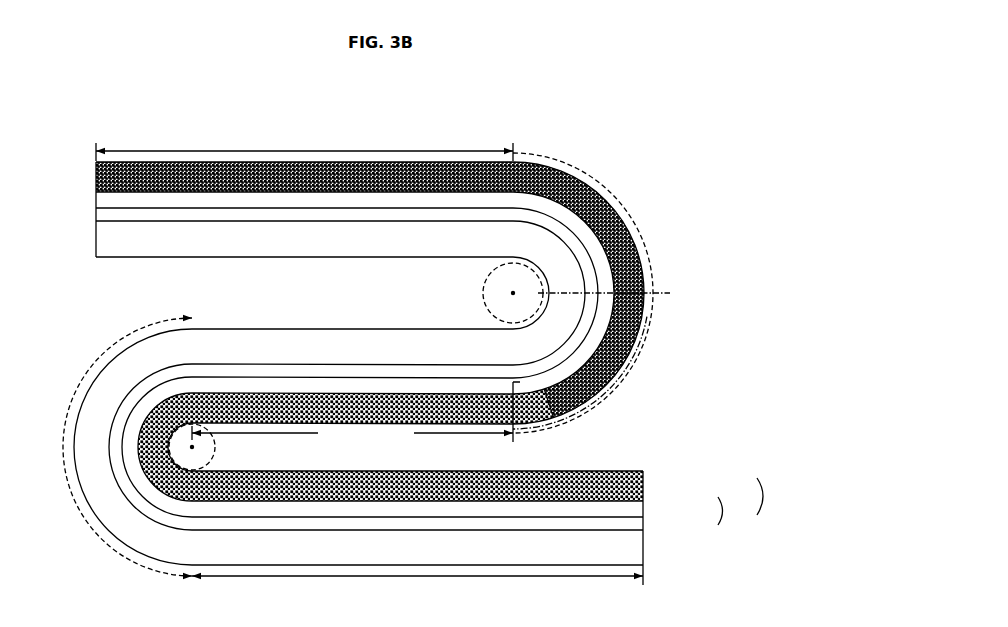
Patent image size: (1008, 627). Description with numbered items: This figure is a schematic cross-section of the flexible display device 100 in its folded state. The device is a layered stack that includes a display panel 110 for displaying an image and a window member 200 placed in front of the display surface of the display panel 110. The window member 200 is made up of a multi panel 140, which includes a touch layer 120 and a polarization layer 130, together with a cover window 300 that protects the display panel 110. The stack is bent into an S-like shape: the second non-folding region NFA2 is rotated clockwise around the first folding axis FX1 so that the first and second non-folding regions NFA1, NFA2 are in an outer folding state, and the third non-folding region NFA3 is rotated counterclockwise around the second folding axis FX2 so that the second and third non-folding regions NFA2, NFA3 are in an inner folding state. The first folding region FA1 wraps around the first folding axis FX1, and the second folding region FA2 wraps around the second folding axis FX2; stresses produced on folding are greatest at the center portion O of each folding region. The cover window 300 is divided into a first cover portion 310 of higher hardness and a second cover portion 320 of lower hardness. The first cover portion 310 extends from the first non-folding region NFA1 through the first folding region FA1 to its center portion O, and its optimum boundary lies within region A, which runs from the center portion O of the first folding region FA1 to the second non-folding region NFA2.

The flexible display device 100 is at (658, 125).
The display panel 110 is at (627, 543).
The touch layer 120 is at (627, 522).
The polarization layer 130 is at (627, 507).
The multi panel 140 is at (735, 511).
The window member 200 is at (775, 496).
The cover window 300 is at (415, 331).
The first cover portion 310 is at (587, 403).
The second cover portion 320 is at (542, 415).
The first folding axis FX1 is at (511, 293).
The second folding axis FX2 is at (194, 447).
The first folding region FA1 is at (602, 293).
The second folding region FA2 is at (107, 447).
The first non-folding region NFA1 is at (304, 142).
The second non-folding region NFA2 is at (356, 412).
The third non-folding region NFA3 is at (417, 586).
The center portion O is at (612, 293).
The region A is at (644, 353).